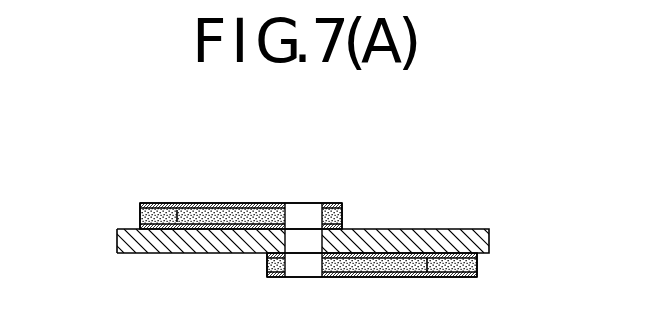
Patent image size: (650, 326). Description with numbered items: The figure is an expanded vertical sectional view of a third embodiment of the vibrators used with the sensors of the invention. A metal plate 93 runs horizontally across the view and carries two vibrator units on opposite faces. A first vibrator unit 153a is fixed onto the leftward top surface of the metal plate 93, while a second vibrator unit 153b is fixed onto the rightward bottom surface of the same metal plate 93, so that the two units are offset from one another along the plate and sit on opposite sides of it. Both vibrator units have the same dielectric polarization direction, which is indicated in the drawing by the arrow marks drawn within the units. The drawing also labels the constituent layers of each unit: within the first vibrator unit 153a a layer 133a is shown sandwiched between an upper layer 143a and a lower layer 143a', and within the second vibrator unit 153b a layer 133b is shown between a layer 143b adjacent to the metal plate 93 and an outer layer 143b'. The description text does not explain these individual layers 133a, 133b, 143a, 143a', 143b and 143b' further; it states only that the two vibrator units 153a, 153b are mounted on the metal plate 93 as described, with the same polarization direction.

The metal plate 93 is at (490, 230).
The upper piezoelectric body 133a is at (140, 213).
The lower piezoelectric body 133b is at (477, 262).
The upper outer electrode 143a is at (241, 170).
The upper inner electrode 143a' is at (241, 264).
The lower inner electrode 143b is at (372, 218).
The lower outer electrode 143b' is at (372, 299).
The first vibrator unit 153a is at (115, 218).
The second vibrator unit 153b is at (455, 220).